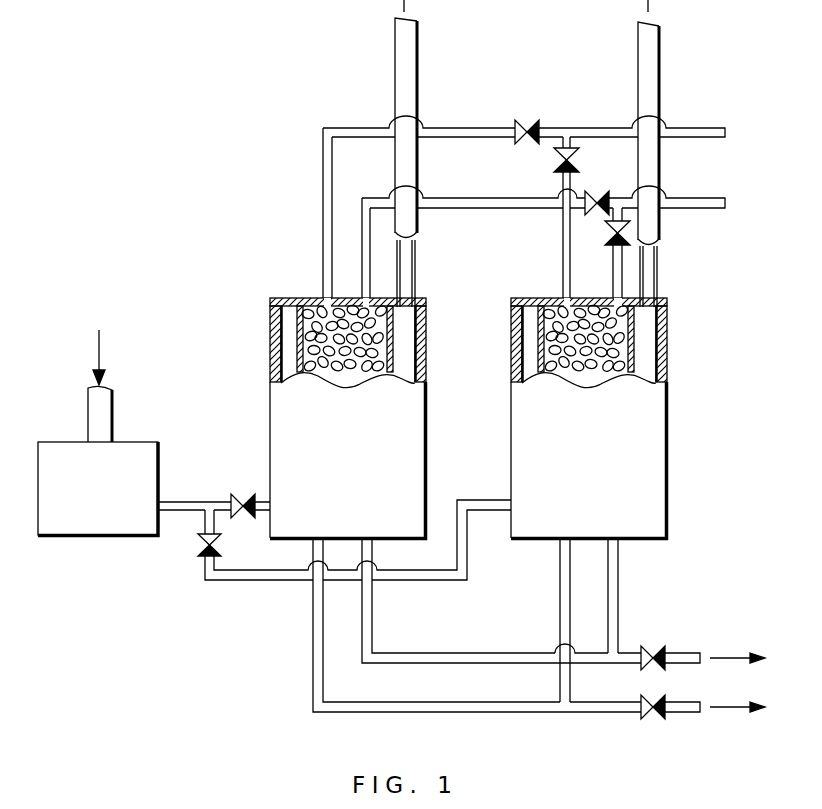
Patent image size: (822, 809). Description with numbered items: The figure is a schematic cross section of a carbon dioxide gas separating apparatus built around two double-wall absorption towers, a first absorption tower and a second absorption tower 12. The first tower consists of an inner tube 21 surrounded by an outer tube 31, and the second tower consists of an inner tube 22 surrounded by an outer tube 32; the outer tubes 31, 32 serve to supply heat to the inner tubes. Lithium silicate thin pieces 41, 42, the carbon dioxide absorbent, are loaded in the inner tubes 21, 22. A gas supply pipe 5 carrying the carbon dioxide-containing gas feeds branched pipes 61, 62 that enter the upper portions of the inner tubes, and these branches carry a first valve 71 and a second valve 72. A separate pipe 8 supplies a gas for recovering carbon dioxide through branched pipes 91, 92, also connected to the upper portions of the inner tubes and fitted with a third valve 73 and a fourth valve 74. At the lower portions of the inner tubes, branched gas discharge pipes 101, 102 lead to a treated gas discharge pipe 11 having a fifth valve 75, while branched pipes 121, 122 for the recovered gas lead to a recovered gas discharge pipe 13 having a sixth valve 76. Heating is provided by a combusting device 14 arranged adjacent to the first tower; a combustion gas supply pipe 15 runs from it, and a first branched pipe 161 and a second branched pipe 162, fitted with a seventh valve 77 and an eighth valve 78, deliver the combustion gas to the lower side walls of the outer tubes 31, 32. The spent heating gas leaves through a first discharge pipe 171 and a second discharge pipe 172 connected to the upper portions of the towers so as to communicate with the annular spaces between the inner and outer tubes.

The treated gas discharge pipe 11 is at (691, 712).
The second absorption tower 12 is at (671, 307).
The inner tube 21 is at (298, 345).
The inner tube 22 is at (635, 349).
The outer tube 31 is at (275, 378).
The outer tube 32 is at (665, 367).
The lithium silicate thin pieces 41 is at (392, 325).
The lithium silicate thin pieces 42 is at (547, 354).
The gas supply pipe 5 is at (714, 128).
The branched pipe 61 is at (322, 205).
The branched pipe 62 is at (560, 245).
The first valve 71 is at (527, 119).
The second valve 72 is at (554, 160).
The third valve 73 is at (592, 191).
The fourth valve 74 is at (609, 246).
The fifth valve 75 is at (647, 720).
The sixth valve 76 is at (649, 668).
The seventh valve 77 is at (243, 496).
The eighth valve 78 is at (198, 549).
The pipe 8 is at (695, 198).
The branched pipe 91 is at (367, 198).
The branched pipe 92 is at (627, 212).
The branched gas discharge pipe 101 is at (313, 672).
The branched gas discharge pipe 102 is at (560, 614).
The branched pipe 121 is at (372, 612).
The branched pipe 122 is at (618, 580).
The recovered gas discharge pipe 13 is at (689, 654).
The combusting device 14 is at (58, 448).
The combustion gas supply pipe 15 is at (183, 502).
The first branched pipe 161 is at (258, 512).
The second branched pipe 162 is at (271, 580).
The first discharge pipe 171 is at (418, 52).
The second discharge pipe 172 is at (660, 52).